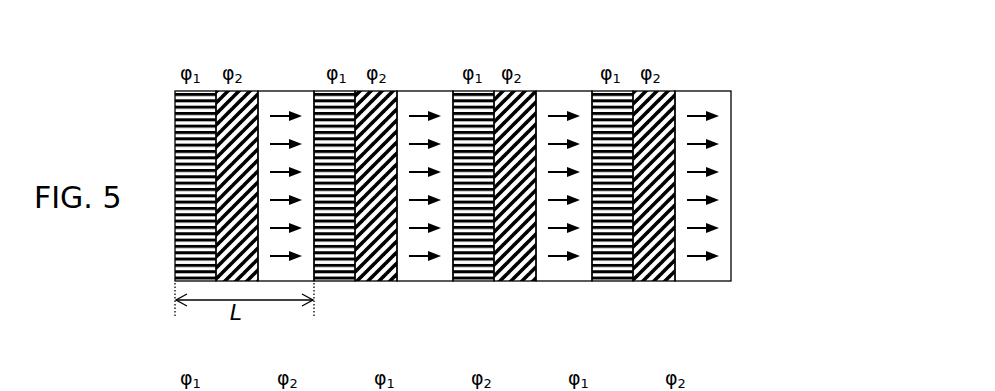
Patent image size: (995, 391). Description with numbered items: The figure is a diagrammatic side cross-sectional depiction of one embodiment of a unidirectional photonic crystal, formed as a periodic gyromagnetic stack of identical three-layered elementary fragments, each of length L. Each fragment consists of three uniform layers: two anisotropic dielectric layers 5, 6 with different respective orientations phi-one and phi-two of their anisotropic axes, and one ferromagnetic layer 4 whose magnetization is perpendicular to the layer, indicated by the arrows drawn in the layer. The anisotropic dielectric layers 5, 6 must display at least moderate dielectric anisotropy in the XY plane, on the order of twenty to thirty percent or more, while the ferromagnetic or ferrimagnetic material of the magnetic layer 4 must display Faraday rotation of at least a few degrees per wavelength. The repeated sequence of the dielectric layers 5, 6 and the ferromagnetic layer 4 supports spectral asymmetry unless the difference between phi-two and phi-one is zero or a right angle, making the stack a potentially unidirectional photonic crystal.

The ferromagnetic layer 4 is at (769, 148).
The anisotropic dielectric layer 5 is at (730, 241).
The anisotropic dielectric layer 6 is at (748, 209).